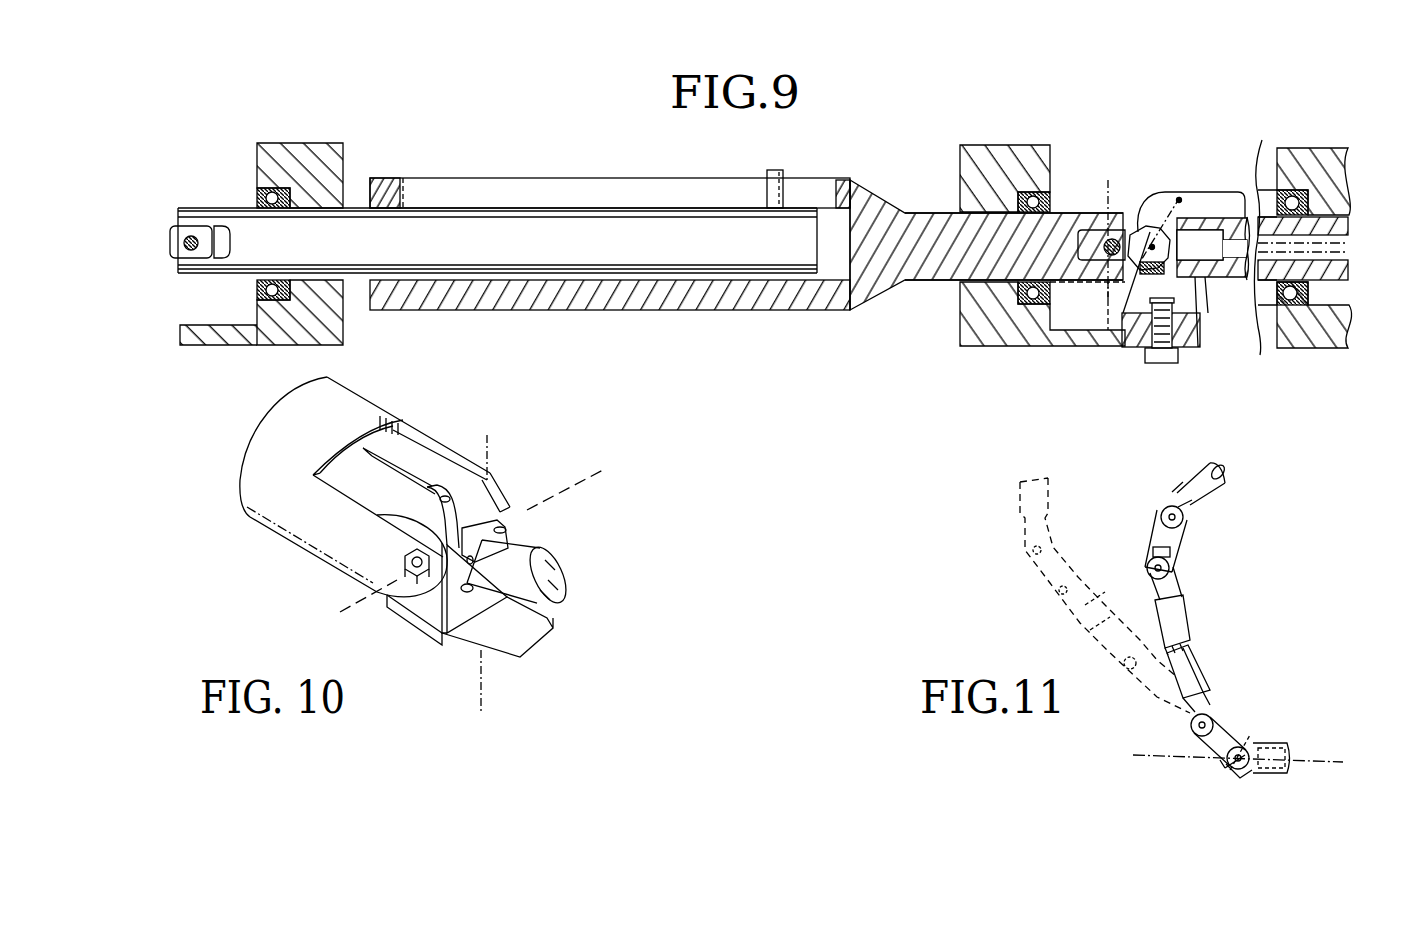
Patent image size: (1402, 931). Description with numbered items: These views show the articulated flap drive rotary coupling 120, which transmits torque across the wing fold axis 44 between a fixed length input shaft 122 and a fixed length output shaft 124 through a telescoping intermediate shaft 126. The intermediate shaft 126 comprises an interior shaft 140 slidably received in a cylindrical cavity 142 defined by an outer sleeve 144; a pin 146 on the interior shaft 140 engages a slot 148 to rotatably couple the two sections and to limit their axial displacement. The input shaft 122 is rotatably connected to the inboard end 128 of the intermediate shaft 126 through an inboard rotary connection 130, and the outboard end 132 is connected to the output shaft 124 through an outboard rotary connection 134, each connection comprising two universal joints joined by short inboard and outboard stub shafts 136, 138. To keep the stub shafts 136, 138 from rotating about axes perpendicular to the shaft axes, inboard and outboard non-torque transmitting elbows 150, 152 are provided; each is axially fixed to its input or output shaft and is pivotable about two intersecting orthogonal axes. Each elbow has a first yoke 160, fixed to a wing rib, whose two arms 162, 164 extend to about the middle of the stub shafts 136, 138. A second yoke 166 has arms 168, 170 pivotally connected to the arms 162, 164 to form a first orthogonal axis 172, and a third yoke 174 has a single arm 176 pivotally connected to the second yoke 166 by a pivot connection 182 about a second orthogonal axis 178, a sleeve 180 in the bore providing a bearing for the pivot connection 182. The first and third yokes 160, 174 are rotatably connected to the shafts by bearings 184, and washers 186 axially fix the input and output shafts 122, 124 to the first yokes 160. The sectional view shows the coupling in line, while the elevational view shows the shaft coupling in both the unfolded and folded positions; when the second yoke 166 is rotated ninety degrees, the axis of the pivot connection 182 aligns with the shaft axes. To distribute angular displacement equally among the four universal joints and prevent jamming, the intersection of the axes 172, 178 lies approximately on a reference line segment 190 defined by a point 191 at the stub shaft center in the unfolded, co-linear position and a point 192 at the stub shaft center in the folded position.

In FIG. 11, the wing fold axis 44 is at (1138, 620).
In FIG. 9, the articulated flap drive rotary coupling 120 is at (879, 126).
In FIG. 10, the input shaft 122 is at (417, 448).
In FIG. 11, the input shaft 122 is at (1278, 778).
In FIG. 9, the output shaft 124 is at (1350, 228).
In FIG. 11, the output shaft 124 is at (1215, 495).
In FIG. 9, the telescoping intermediate shaft 126 is at (640, 312).
In FIG. 11, the telescoping intermediate shaft 126 is at (1196, 628).
In FIG. 9, the inboard end of the intermediate shaft 128 is at (206, 206).
In FIG. 10, the inboard end of the intermediate shaft 128 is at (572, 553).
In FIG. 11, the inboard end of the intermediate shaft 128 is at (1212, 696).
In FIG. 9, the inboard rotary connection 130 is at (1122, 200).
In FIG. 10, the inboard rotary connection 130 is at (528, 528).
In FIG. 11, the inboard rotary connection 130 is at (1252, 740).
In FIG. 9, the outboard end of the intermediate shaft 132 is at (1075, 214).
In FIG. 11, the outboard end of the intermediate shaft 132 is at (1180, 588).
In FIG. 11, the outboard rotary connection 134 is at (1188, 545).
In FIG. 10, the inboard stub shaft 136 is at (508, 515).
In FIG. 11, the inboard stub shaft 136 is at (1150, 541).
In FIG. 11, the outboard stub shaft 138 is at (1258, 745).
In FIG. 9, the interior shaft 140 is at (430, 206).
In FIG. 9, the cylindrical cavity 142 is at (843, 311).
In FIG. 9, the outer sleeve 144 is at (858, 184).
In FIG. 9, the pin 146 is at (784, 178).
In FIG. 9, the slot 148 is at (515, 184).
In FIG. 9, the inboard non-torque transmitting elbow 150 is at (320, 134).
In FIG. 10, the inboard non-torque transmitting elbow 150 is at (320, 566).
In FIG. 9, the outboard non-torque transmitting elbow 152 is at (1313, 146).
In FIG. 9, the first yoke 160 is at (1287, 347).
In FIG. 10, the first yoke 160 is at (395, 410).
In FIG. 10, the arm of first yoke 162 is at (300, 492).
In FIG. 9, the arm of first yoke 164 is at (1200, 193).
In FIG. 10, the arm of first yoke 164 is at (498, 470).
In FIG. 9, the second yoke 166 is at (1120, 316).
In FIG. 10, the second yoke 166 is at (458, 636).
In FIG. 10, the arm of second yoke 168 is at (420, 618).
In FIG. 9, the arm of second yoke 170 is at (1200, 300).
In FIG. 10, the first orthogonal axis 172 is at (590, 470).
In FIG. 9, the third yoke 174 is at (345, 334).
In FIG. 9, the single arm 176 is at (250, 344).
In FIG. 10, the single arm 176 is at (503, 643).
In FIG. 10, the second orthogonal axis 178 is at (490, 435).
In FIG. 9, the sleeve 180 is at (1185, 355).
In FIG. 9, the pivot connection 182 is at (1155, 360).
In FIG. 9, the bearing 184 is at (262, 195).
In FIG. 9, the washer 186 is at (1270, 190).
In FIG. 9, the reference line segment 190 is at (1112, 232).
In FIG. 11, the reference line segment 190 is at (1232, 766).
In FIG. 9, the point 191 is at (1137, 272).
In FIG. 11, the point 191 is at (1212, 757).
In FIG. 9, the point 192 is at (1170, 196).
In FIG. 11, the point 192 is at (1246, 736).